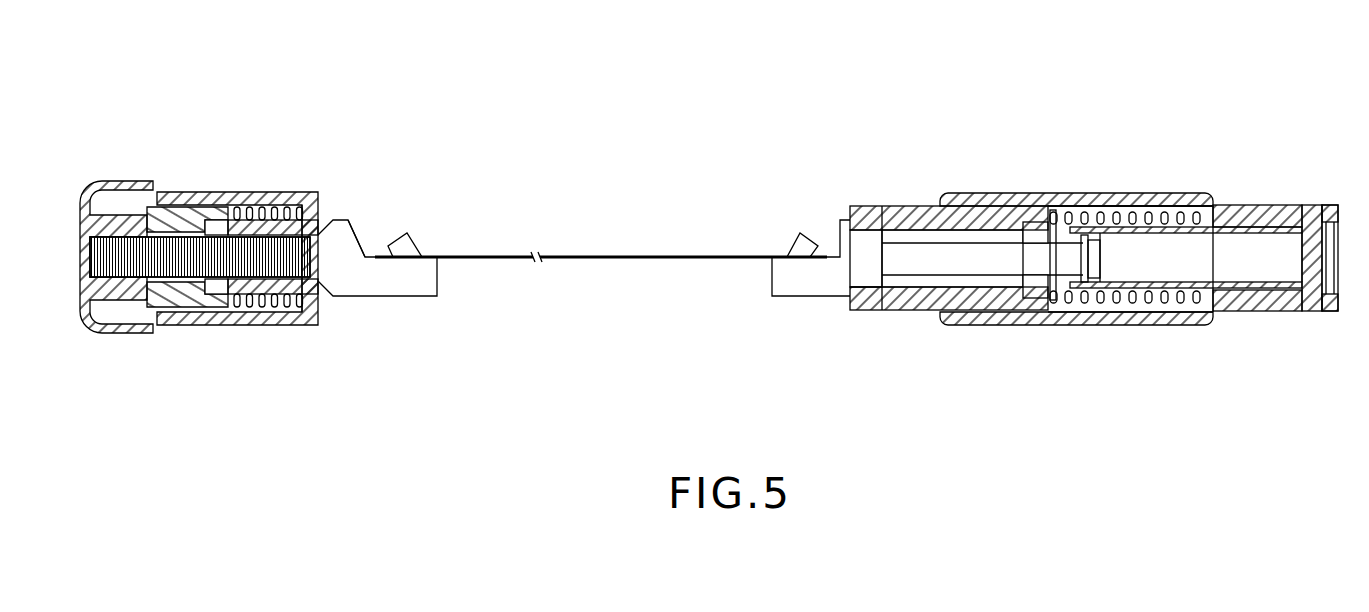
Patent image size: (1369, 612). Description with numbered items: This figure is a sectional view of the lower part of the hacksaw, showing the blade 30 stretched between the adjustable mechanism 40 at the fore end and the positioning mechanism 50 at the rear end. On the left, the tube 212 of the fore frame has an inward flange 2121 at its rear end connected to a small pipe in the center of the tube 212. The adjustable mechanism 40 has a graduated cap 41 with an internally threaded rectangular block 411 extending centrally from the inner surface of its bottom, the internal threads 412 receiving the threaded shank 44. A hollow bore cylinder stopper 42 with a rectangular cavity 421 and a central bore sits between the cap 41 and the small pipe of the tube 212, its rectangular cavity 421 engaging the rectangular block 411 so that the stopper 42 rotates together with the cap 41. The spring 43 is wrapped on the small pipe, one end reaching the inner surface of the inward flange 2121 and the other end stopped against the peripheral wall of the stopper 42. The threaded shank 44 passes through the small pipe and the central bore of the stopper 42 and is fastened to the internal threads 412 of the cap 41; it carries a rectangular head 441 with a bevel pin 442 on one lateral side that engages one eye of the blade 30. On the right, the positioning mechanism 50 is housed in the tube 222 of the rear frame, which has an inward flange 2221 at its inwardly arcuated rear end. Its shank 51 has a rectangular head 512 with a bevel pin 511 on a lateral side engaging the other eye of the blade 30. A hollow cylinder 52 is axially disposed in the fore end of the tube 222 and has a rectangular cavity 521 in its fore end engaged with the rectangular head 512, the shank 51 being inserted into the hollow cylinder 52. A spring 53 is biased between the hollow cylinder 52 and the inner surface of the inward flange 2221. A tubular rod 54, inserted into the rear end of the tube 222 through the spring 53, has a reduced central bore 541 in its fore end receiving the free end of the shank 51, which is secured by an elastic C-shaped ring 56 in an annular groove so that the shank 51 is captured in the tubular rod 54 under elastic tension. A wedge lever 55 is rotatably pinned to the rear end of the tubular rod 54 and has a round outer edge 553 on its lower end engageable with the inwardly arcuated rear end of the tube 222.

The adjustable mechanism 40 is at (209, 132).
The graduated cap 41 is at (101, 180).
The rectangular block 411 is at (143, 206).
The internal threads 412 is at (162, 308).
The hollow bore cylinder stopper 42 is at (185, 236).
The rectangular cavity 421 is at (193, 296).
The spring 43 is at (247, 206).
The threaded shank 44 is at (290, 222).
The rectangular head 441 is at (343, 231).
The bevel pin 442 is at (406, 233).
The tube 212 is at (272, 322).
The inward flange 2121 is at (322, 318).
The blade 30 is at (577, 256).
The positioning mechanism 50 is at (1037, 130).
The shank 51 is at (975, 257).
The bevel pin 511 is at (800, 234).
The rectangular head 512 is at (862, 220).
The hollow cylinder 52 is at (912, 215).
The rectangular cavity 521 is at (867, 302).
The spring 53 is at (1165, 320).
The tube 222 is at (1175, 198).
The inward flange 2221 is at (1217, 314).
The tubular rod 54 is at (1270, 215).
The reduced central bore 541 is at (1077, 303).
The wedge lever 55 is at (1236, 226).
The end cap 553 is at (1310, 214).
The elastic C-shaped ring 56 is at (1086, 256).